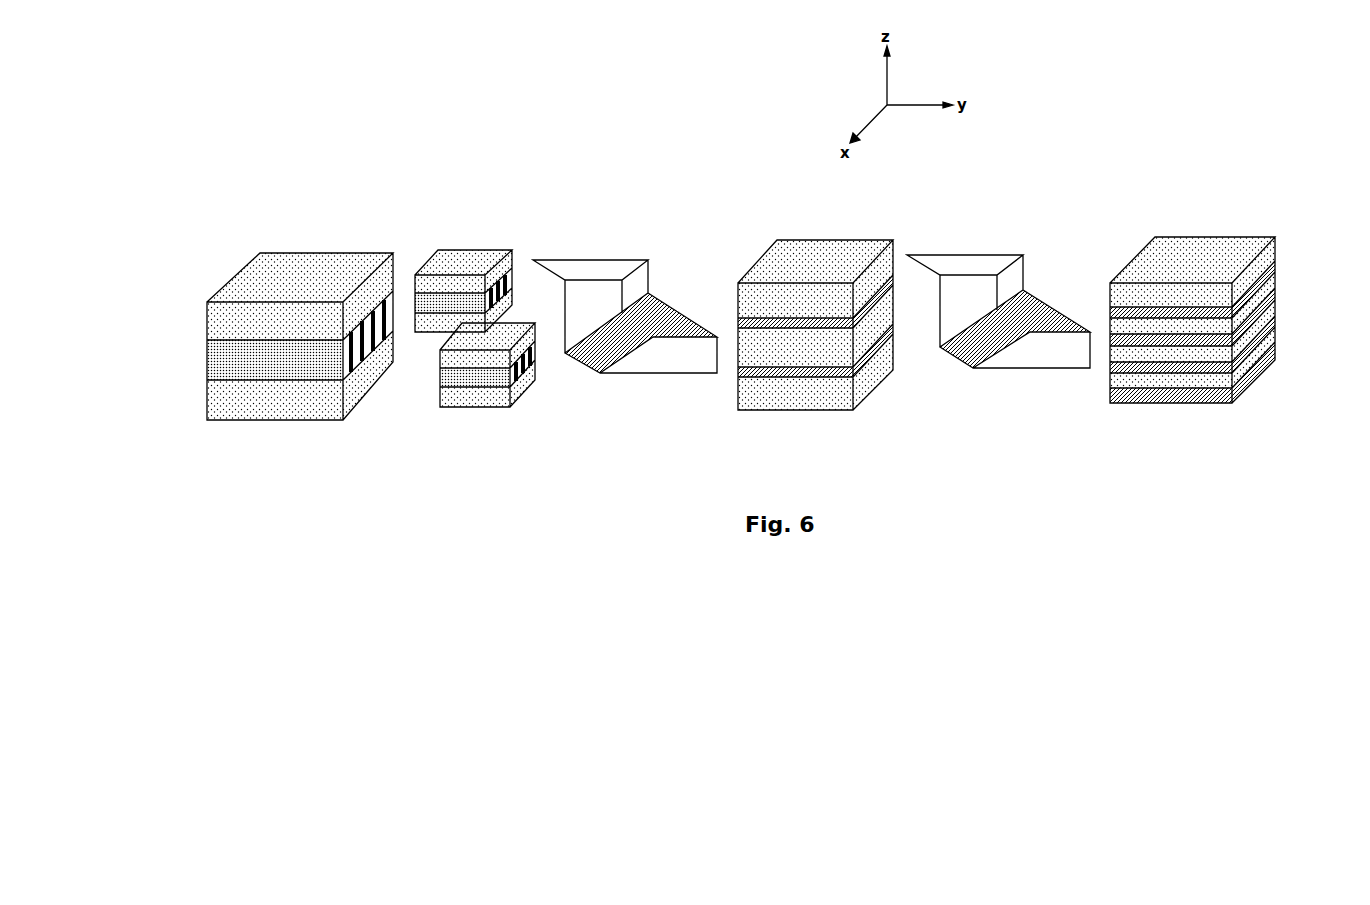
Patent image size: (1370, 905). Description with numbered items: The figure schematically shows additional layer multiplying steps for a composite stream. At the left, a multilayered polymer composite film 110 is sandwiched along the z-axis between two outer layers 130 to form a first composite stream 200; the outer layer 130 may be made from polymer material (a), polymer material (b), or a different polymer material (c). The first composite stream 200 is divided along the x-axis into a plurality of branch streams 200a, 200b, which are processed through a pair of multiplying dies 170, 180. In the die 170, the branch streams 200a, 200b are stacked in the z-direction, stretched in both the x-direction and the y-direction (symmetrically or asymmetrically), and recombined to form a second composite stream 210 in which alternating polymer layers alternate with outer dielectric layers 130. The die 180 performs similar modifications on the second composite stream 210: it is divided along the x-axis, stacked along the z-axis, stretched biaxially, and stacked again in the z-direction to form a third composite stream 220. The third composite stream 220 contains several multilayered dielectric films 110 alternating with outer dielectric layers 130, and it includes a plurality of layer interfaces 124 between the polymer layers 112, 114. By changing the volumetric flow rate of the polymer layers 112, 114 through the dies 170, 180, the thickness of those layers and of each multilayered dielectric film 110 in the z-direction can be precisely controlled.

The first composite stream 200 is at (249, 233).
The branch stream 200a is at (479, 233).
The branch stream 200b is at (524, 423).
The second composite stream 210 is at (805, 219).
The third composite stream 220 is at (1178, 206).
The multiplying die 170 is at (672, 274).
The multiplying die 180 is at (1005, 235).
The outer layer 130 is at (225, 325).
The multilayered polymer composite film 110 is at (194, 364).
The layer interface 124 is at (362, 365).
The polymer layer 112 is at (1277, 375).
The polymer layer 114 is at (1277, 328).